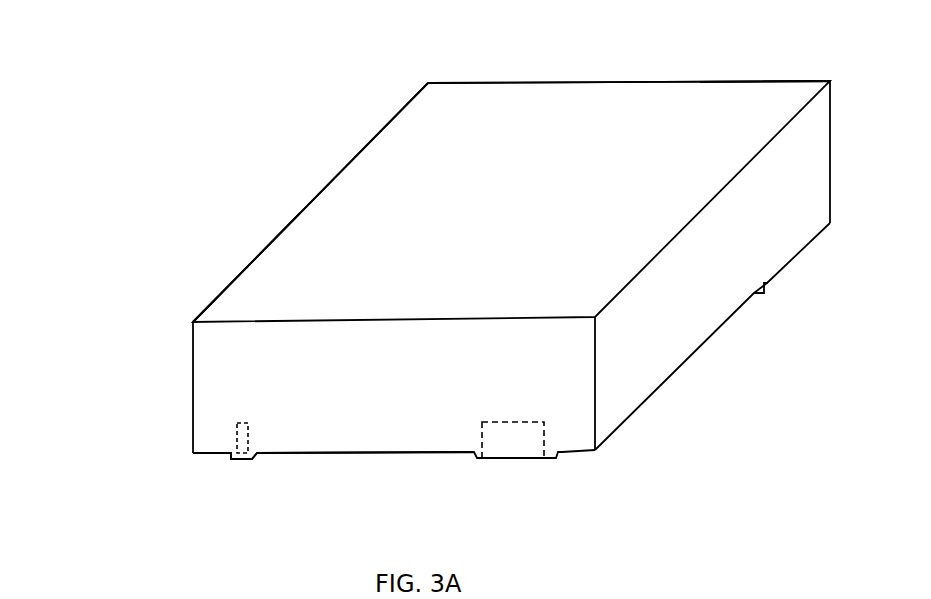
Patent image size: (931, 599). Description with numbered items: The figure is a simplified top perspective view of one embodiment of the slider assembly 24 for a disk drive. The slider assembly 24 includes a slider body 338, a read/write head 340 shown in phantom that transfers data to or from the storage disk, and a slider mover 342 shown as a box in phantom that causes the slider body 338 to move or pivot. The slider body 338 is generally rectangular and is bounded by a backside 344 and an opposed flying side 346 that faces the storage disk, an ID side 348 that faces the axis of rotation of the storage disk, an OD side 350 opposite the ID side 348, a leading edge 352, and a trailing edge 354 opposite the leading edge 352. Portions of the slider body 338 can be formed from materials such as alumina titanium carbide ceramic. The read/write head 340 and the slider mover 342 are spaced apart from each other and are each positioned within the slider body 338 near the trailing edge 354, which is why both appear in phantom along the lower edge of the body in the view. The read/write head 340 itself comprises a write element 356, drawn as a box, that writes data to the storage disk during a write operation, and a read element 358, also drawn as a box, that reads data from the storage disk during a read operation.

The slider assembly 24 is at (596, 64).
The slider body 338 is at (447, 108).
The read/write head 340 is at (105, 397).
The slider mover 342 is at (495, 433).
The backside 344 is at (332, 208).
The flying side 346 is at (393, 454).
The ID side 348 is at (773, 253).
The OD side 350 is at (231, 283).
The leading edge 352 is at (748, 82).
The trailing edge 354 is at (305, 423).
The write element 356 is at (237, 425).
The read element 358 is at (237, 443).